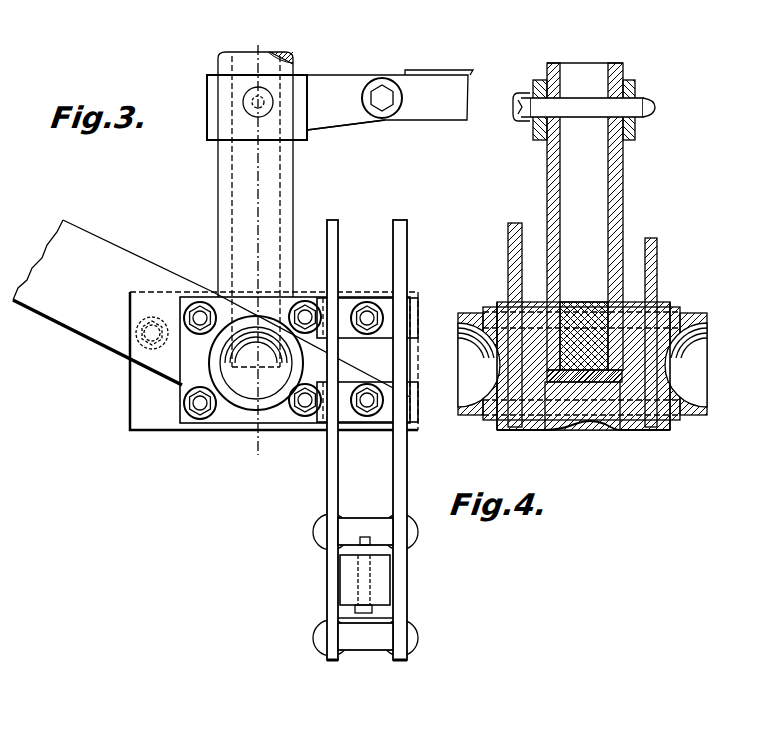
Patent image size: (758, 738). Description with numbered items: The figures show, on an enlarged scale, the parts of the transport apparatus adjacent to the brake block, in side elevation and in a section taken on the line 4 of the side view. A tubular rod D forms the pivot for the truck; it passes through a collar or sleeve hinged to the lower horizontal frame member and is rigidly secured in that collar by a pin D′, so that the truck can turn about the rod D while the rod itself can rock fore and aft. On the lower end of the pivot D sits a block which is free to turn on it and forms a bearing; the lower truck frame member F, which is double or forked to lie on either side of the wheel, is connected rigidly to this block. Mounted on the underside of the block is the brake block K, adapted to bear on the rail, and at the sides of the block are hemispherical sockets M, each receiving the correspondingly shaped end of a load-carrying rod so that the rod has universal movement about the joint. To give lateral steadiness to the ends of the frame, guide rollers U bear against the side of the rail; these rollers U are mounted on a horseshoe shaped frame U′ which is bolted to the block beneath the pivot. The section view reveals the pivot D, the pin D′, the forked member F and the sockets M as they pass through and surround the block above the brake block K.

In FIG. 3, the section line 4— 4 is at (240, 471).
In FIG. 3, the lower truck frame member F is at (130, 290).
In FIG. 4, the lower truck frame member F is at (508, 270).
In FIG. 3, the rod D is at (228, 209).
In FIG. 4, the rod D is at (585, 216).
In FIG. 3, the pin D' is at (265, 89).
In FIG. 4, the pin D' is at (576, 124).
In FIG. 3, the lower horizontal member A' is at (390, 117).
In FIG. 3, the hemispherical socket M is at (228, 365).
In FIG. 4, the hemispherical socket M is at (470, 410).
In FIG. 3, the horseshoe shaped frame U' is at (349, 440).
In FIG. 3, the guide roller U is at (333, 575).
In FIG. 4, the brake block K is at (576, 425).